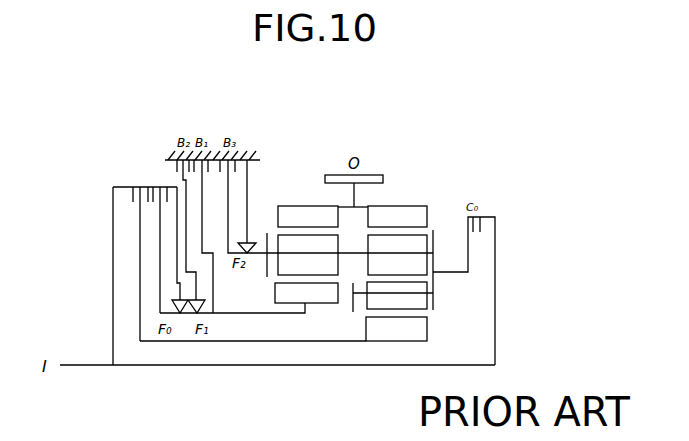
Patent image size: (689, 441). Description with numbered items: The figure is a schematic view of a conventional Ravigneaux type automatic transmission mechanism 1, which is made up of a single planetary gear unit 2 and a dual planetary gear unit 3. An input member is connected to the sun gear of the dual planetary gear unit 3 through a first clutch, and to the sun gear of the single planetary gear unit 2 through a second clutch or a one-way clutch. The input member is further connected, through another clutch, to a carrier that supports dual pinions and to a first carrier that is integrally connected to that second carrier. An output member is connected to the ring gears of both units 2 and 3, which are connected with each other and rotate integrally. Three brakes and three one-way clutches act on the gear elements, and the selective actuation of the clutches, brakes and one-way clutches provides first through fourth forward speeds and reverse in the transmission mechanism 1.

The Ravigneaux type automatic transmission mechanism 1 is at (92, 150).
The single planetary gear unit 2 is at (294, 204).
The dual planetary gear unit 3 is at (412, 203).